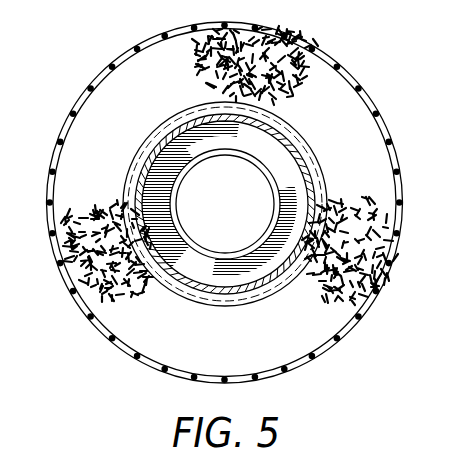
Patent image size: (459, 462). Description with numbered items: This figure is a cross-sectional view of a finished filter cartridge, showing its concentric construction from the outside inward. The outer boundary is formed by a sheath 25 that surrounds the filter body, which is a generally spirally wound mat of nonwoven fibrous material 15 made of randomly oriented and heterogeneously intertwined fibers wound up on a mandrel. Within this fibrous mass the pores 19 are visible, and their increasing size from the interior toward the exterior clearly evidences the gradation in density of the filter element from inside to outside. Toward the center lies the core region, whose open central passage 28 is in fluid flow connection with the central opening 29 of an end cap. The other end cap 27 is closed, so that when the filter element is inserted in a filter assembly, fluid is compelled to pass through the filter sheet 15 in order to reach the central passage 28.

The nonwoven fibrous material 15 is at (377, 93).
The pores 19 is at (357, 259).
The sheath 25 is at (100, 332).
The end cap 27 is at (165, 153).
The central passage 28 is at (217, 283).
The central opening 29 is at (238, 209).